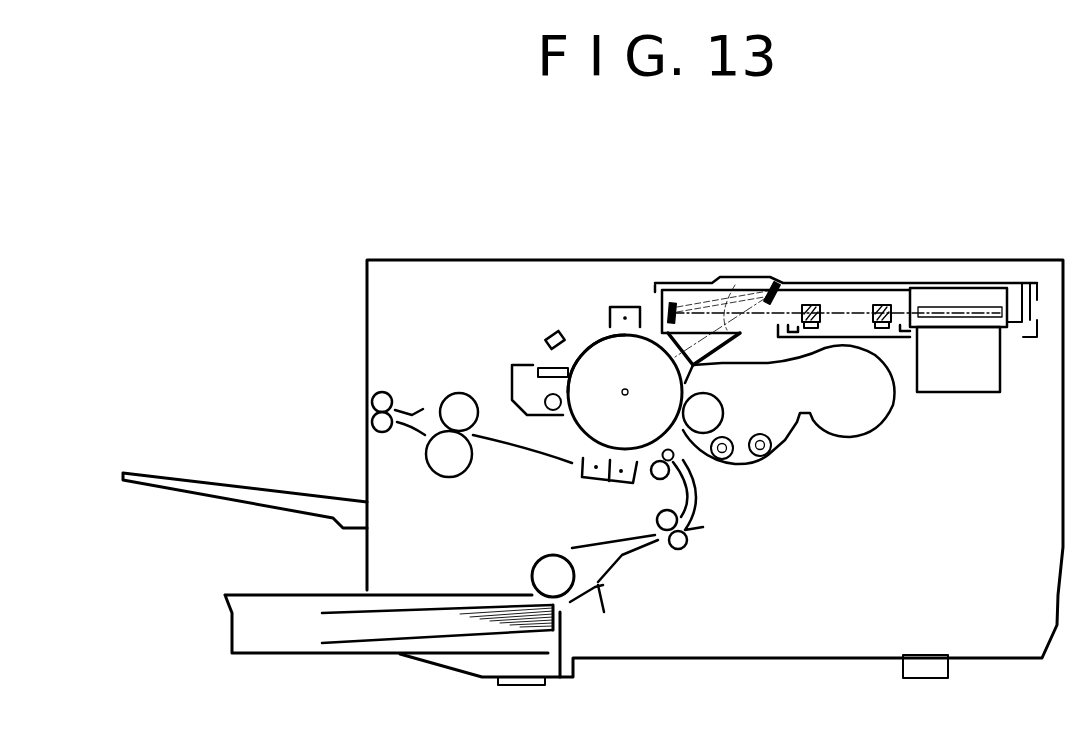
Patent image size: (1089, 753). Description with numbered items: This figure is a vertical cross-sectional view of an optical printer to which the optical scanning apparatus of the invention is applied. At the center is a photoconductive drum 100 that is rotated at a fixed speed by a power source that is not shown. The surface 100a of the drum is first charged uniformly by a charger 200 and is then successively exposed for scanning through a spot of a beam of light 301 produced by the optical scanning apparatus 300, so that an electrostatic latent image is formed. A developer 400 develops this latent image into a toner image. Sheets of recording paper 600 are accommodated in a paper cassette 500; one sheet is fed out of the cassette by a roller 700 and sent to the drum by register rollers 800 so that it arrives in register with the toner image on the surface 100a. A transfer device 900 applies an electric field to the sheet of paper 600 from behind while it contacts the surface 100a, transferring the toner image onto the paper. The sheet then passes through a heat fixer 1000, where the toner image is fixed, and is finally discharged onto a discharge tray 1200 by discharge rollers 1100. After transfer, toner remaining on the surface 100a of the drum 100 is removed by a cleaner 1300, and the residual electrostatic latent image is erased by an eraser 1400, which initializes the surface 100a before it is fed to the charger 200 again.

The photoconductive drum 100 is at (591, 348).
The surface of the photoconductive drum 100a is at (583, 346).
The charger 200 is at (626, 306).
The optical scanning apparatus 300 is at (863, 283).
The beam of light 301 is at (745, 283).
The developer 400 is at (730, 464).
The paper cassette 500 is at (310, 655).
The sheet of recording paper 600 is at (537, 631).
The roller 700 is at (530, 580).
The register rollers 800 is at (683, 550).
The transfer device 900 is at (623, 483).
The heat fixer 1000 is at (440, 402).
The discharge rollers 1100 is at (372, 398).
The discharge tray 1200 is at (205, 485).
The cleaner 1300 is at (538, 369).
The eraser 1400 is at (548, 333).